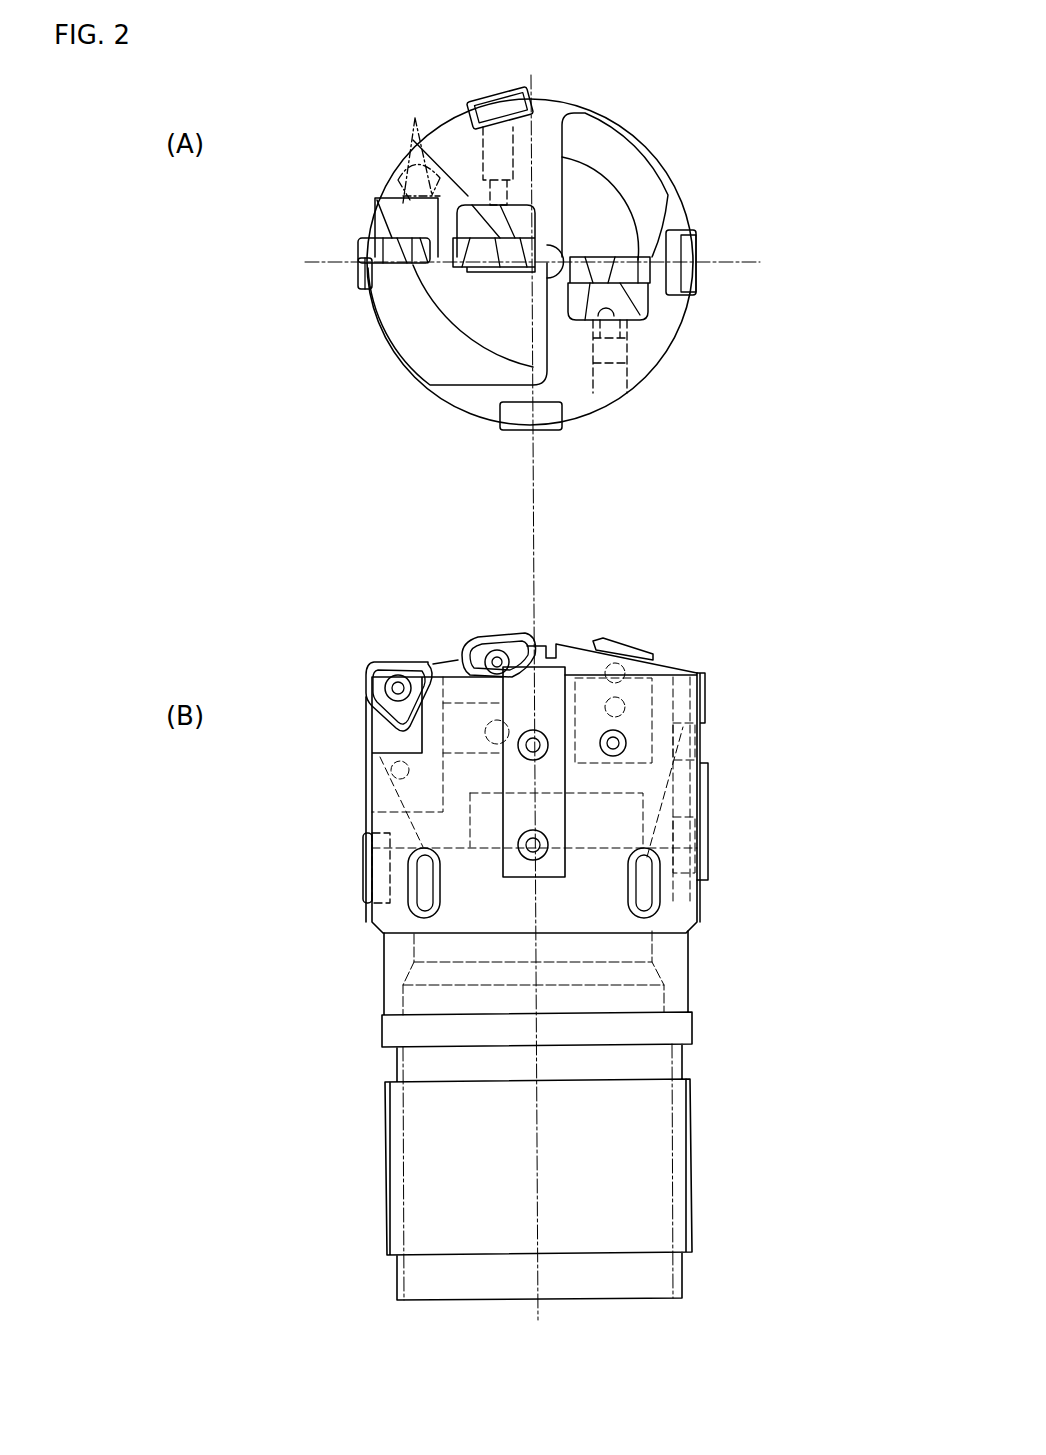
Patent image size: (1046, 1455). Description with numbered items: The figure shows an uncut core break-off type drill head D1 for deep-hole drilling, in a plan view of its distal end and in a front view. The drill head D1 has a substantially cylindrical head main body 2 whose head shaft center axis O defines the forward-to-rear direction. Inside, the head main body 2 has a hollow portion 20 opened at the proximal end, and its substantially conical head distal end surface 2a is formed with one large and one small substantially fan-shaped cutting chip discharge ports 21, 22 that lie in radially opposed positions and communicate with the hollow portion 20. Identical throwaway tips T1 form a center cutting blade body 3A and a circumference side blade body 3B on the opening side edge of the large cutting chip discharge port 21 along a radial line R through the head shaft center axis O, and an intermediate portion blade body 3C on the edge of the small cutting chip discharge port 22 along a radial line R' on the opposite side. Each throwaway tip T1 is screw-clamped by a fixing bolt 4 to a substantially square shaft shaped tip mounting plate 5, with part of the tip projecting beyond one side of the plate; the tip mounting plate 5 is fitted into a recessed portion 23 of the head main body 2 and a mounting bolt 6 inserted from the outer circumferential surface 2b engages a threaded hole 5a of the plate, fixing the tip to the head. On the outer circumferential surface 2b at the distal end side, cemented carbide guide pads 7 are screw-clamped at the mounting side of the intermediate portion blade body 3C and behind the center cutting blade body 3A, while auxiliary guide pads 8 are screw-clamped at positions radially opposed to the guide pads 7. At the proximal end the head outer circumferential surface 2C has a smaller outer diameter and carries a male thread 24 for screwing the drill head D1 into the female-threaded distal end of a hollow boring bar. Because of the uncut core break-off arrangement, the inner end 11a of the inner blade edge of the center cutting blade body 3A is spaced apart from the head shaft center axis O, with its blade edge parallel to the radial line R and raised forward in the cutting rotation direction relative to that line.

The head main body 2 is at (693, 990).
The head distal end surface 2a is at (578, 385).
The outer circumferential surface 2b is at (420, 797).
The head outer circumferential surface at proximal end side 2C is at (420, 1160).
The center cutting blade body 3A is at (467, 270).
The circumference side blade body 3B is at (362, 245).
The intermediate portion blade body 3C is at (650, 252).
The throwaway tip T1 is at (388, 665).
The fixing bolt 4 is at (372, 704).
The tip mounting plate 5 is at (325, 743).
The threaded hole 5a is at (395, 763).
The mounting bolt 6 is at (602, 382).
The guide pad 7 is at (498, 100).
The auxiliary guide pad 8 is at (358, 275).
The inner end of inner blade edge 11a is at (530, 268).
The hollow portion 20 is at (600, 170).
The large cutting chip discharge port 21 is at (397, 343).
The small cutting chip discharge port 22 is at (625, 160).
The recessed portion 23 is at (528, 152).
The male thread 24 is at (690, 1152).
The drill head D1 is at (680, 192).
The head shaft center axis O is at (550, 262).
The radial line R is at (531, 231).
The radial line R' is at (761, 244).